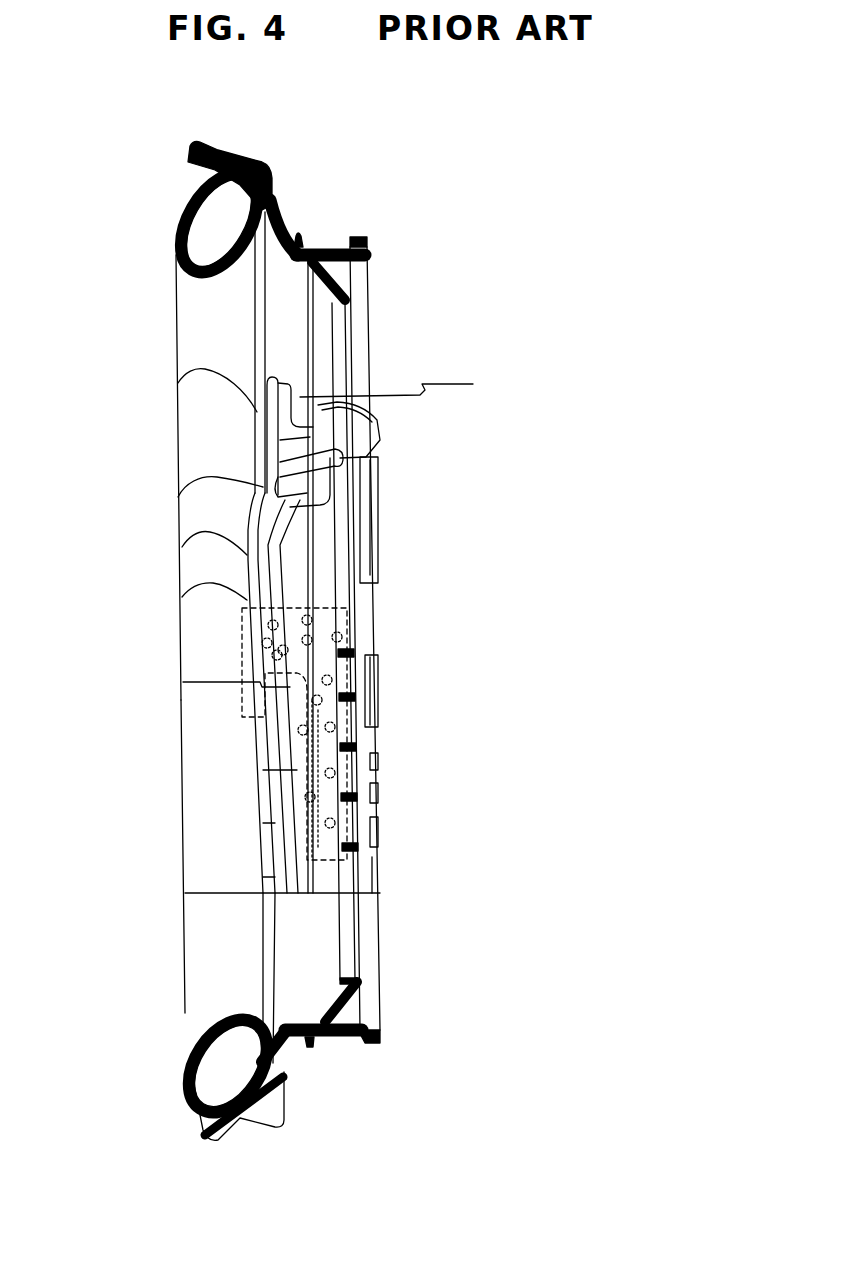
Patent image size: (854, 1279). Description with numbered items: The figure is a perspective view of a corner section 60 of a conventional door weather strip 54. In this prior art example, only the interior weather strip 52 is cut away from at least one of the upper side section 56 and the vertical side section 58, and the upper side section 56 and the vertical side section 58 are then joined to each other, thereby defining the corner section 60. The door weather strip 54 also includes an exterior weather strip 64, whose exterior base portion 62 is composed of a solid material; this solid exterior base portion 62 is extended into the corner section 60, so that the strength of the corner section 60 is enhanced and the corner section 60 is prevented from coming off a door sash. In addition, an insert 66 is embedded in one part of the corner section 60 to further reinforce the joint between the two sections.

The interior weather strip 52 is at (177, 321).
The door weather strip 54 is at (388, 590).
The upper side section 56 is at (370, 310).
The vertical side section 58 is at (183, 972).
The corner section 60 is at (183, 752).
The exterior base portion 62 is at (352, 240).
The exterior weather strip 64 is at (358, 340).
The insert 66 is at (333, 738).